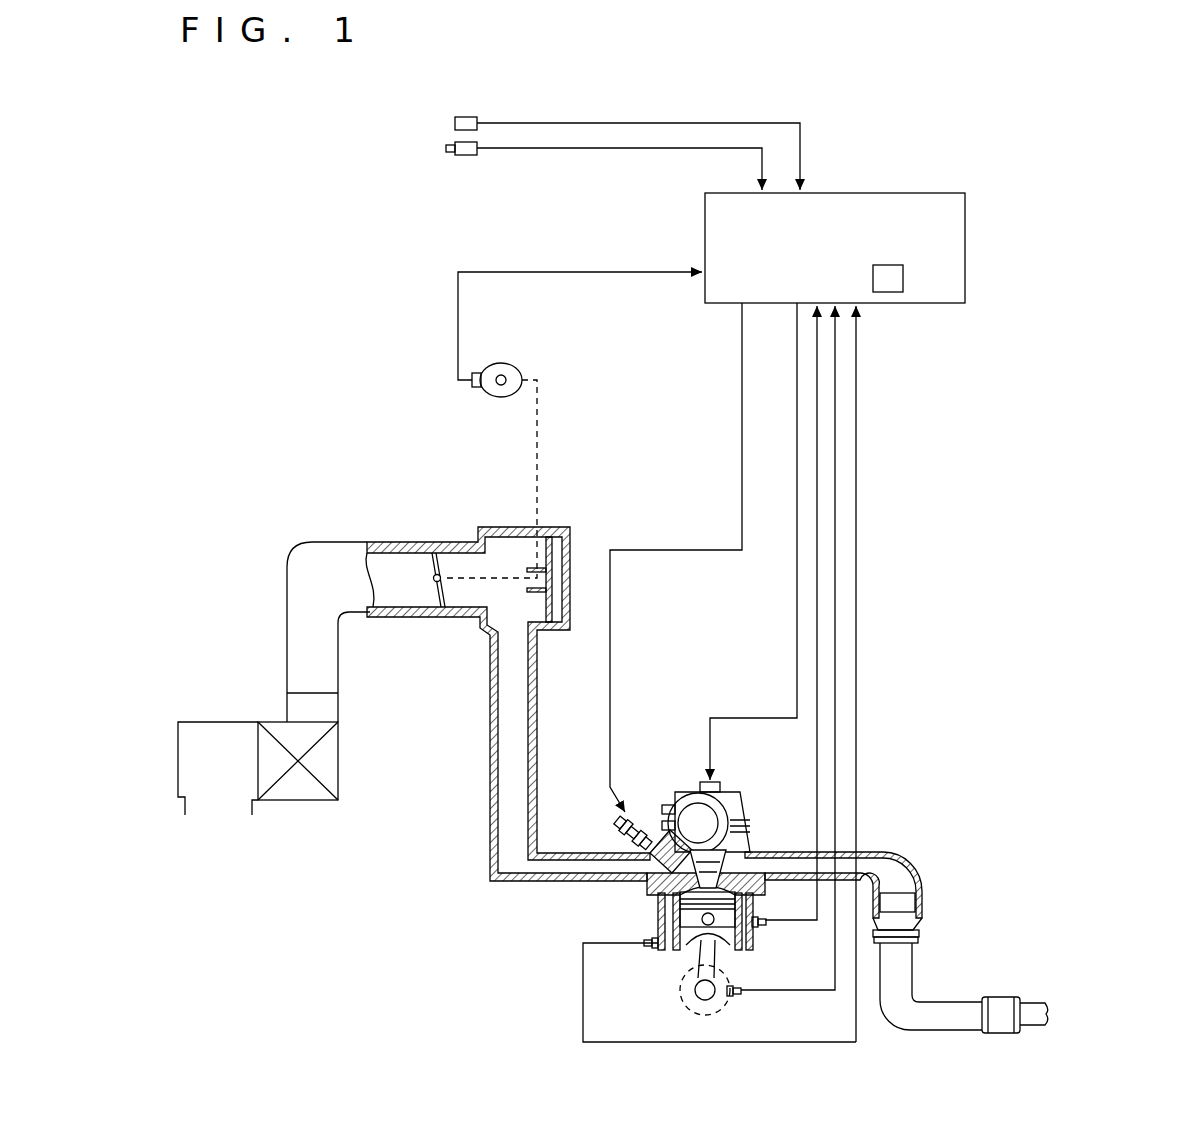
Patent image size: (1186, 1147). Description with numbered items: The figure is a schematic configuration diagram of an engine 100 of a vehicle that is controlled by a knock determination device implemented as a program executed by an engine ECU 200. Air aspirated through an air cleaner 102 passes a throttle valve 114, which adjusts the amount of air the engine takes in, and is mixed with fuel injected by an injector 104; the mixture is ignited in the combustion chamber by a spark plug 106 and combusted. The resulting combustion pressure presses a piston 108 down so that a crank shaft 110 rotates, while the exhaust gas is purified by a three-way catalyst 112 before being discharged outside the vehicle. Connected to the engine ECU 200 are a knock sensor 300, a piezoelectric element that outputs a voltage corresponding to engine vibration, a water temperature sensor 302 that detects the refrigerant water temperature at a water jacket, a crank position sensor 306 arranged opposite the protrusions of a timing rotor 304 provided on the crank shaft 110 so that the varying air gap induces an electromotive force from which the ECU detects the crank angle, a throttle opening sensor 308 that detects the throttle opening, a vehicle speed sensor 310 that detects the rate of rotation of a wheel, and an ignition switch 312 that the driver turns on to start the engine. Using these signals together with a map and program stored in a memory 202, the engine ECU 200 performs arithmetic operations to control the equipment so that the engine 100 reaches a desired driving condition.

The engine 100 is at (622, 905).
The air cleaner 102 is at (298, 800).
The injector 104 is at (618, 822).
The spark plug 106 is at (725, 790).
The piston 108 is at (672, 935).
The crank shaft 110 is at (690, 1010).
The three-way catalyst 112 is at (897, 893).
The throttle valve 114 is at (440, 598).
The engine ECU 200 is at (905, 192).
The memory 202 is at (890, 292).
The knock sensor 300 is at (650, 950).
The water temperature sensor 302 is at (760, 927).
The timing rotor 304 is at (712, 1000).
The crank position sensor 306 is at (740, 998).
The throttle opening sensor 308 is at (508, 363).
The vehicle speed sensor 310 is at (465, 117).
The ignition switch 312 is at (470, 155).